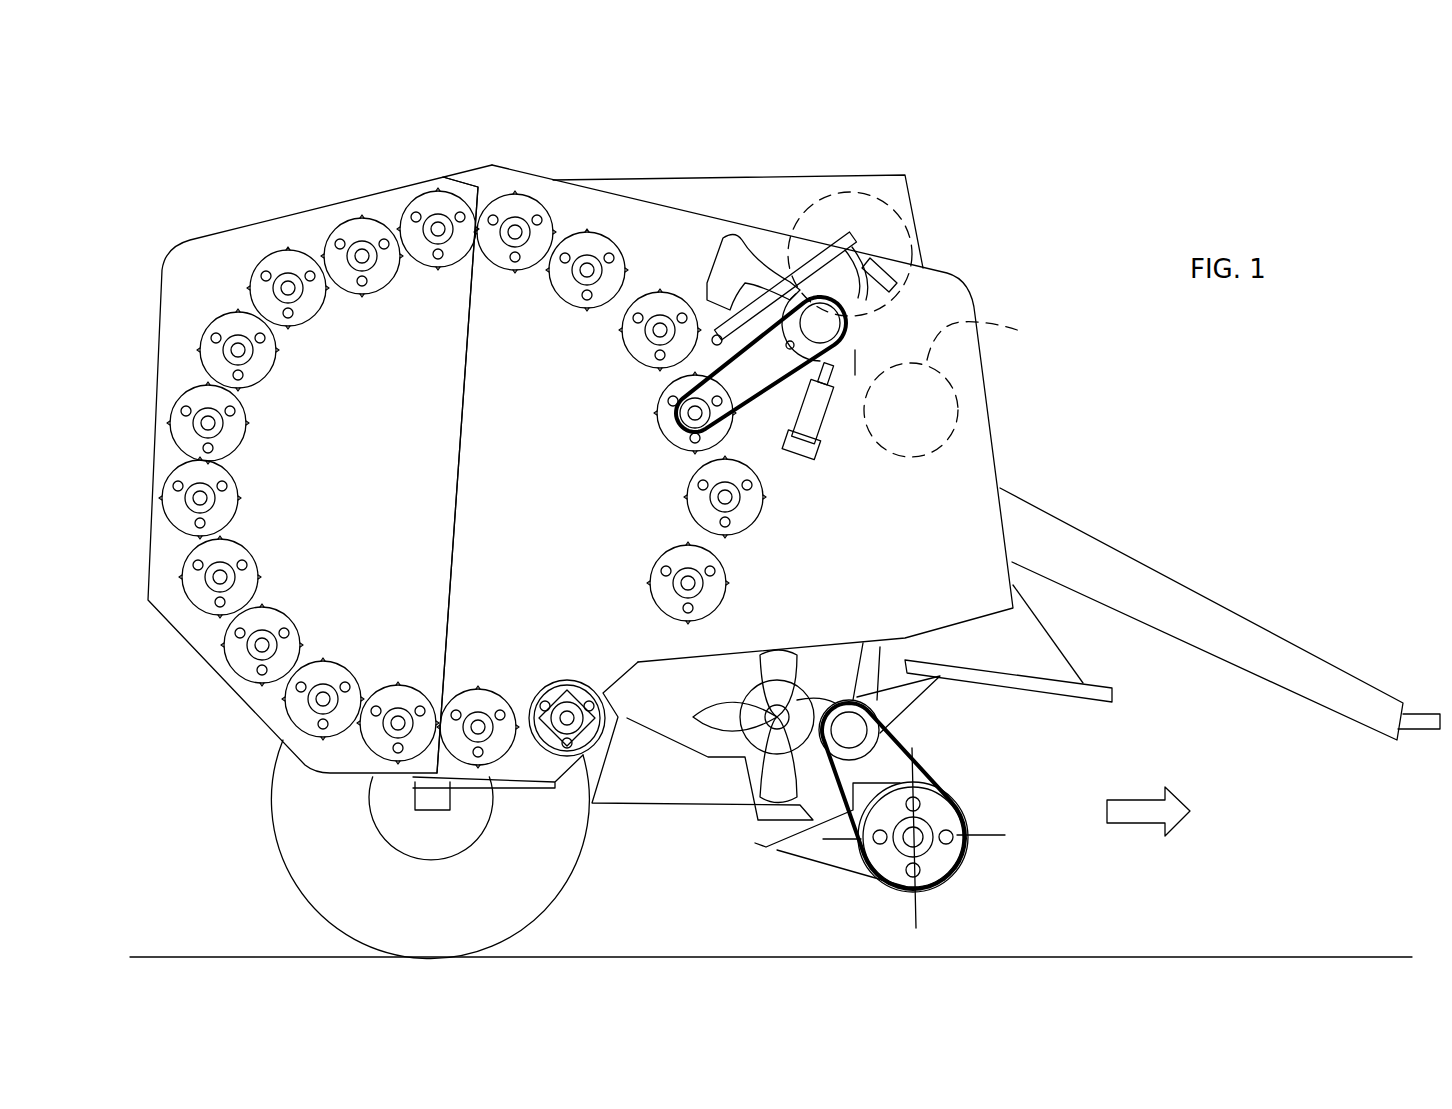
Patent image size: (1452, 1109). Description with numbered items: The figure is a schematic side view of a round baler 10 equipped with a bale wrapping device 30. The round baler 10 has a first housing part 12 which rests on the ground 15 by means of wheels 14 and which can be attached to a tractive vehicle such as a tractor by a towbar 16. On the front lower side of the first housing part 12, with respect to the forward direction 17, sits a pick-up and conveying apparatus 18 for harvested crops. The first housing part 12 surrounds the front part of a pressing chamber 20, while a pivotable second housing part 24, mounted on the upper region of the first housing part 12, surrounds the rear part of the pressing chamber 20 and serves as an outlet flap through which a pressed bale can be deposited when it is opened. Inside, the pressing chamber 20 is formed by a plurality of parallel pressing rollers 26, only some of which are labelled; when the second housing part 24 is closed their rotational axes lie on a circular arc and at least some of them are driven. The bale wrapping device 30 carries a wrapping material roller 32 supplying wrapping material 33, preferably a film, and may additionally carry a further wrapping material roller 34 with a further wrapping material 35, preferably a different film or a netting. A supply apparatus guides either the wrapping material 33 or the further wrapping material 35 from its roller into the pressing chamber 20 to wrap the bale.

The round baler 10 is at (300, 145).
The first housing part 12 is at (592, 476).
The wheels 14 is at (317, 833).
The ground 15 is at (1322, 953).
The towbar 16 is at (1277, 663).
The forward direction 17 is at (1147, 835).
The pick-up and conveying apparatus 18 is at (753, 857).
The pressing chamber 20 is at (510, 323).
The second housing part 24 is at (377, 474).
The pressing rollers 26 is at (268, 353).
The bale wrapping device 30 is at (778, 217).
The wrapping material roller 32 is at (940, 400).
The wrapping material 33 is at (996, 333).
The further wrapping material roller 34 is at (875, 237).
The further wrapping material 35 is at (835, 192).